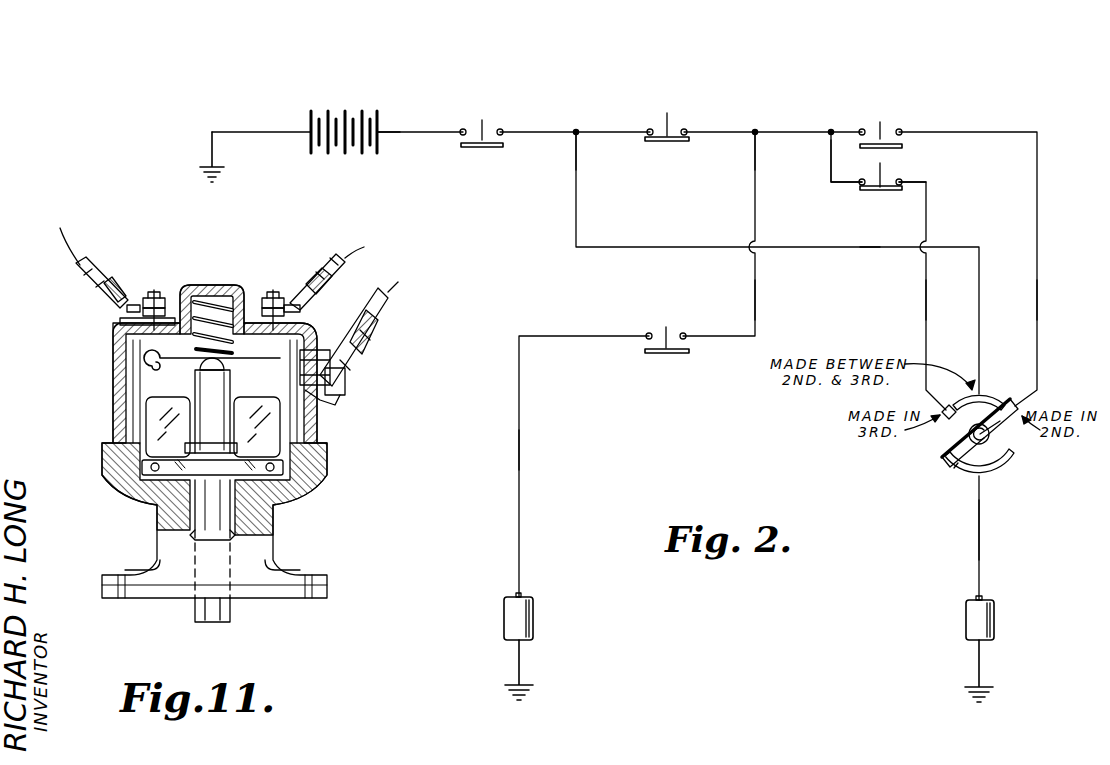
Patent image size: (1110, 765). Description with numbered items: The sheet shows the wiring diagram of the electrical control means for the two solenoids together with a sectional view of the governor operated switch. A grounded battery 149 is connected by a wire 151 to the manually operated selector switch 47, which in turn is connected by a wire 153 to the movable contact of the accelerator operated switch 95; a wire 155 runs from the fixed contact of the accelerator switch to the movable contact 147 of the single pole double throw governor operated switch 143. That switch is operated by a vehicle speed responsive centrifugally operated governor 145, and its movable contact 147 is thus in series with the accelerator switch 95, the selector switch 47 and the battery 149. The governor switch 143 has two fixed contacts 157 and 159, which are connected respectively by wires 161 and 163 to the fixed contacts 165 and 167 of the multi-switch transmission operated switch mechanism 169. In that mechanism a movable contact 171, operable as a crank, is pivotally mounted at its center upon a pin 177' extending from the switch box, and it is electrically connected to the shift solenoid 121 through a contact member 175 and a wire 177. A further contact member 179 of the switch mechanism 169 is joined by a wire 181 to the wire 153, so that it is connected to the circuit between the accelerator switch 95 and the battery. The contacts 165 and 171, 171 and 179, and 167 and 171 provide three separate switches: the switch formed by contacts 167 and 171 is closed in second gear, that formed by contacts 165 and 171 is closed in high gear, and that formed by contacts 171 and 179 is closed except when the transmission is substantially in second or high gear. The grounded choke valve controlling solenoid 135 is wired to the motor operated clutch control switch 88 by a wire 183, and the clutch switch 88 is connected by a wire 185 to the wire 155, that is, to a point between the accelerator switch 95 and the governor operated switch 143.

In FIG. 2, the selector switch 47 is at (475, 151).
In FIG. 2, the clutch control switch 88 is at (660, 356).
In FIG. 2, the accelerator operated switch 95 is at (669, 145).
In FIG. 2, the solenoid 121 is at (997, 620).
In FIG. 2, the choke valve controlling solenoid 135 is at (503, 624).
In FIG. 2, the governor operated switch 143 is at (892, 165).
In FIG. 11, the governor operated switch 143 is at (95, 378).
In FIG. 11, the governor 145 is at (262, 470).
In FIG. 2, the movable contact 147 is at (891, 159).
In FIG. 11, the movable contact 147 is at (250, 300).
In FIG. 2, the battery 149 is at (343, 148).
In FIG. 2, the wire 151 is at (402, 131).
In FIG. 2, the wire 153 is at (599, 130).
In FIG. 2, the wire 155 is at (785, 128).
In FIG. 2, the fixed contact 157 is at (892, 192).
In FIG. 11, the fixed contact 157 is at (325, 363).
In FIG. 2, the fixed contact 159 is at (877, 136).
In FIG. 11, the fixed contact 159 is at (304, 345).
In FIG. 2, the wire 161 is at (926, 300).
In FIG. 11, the wire 161 is at (397, 288).
In FIG. 2, the wire 163 is at (1039, 300).
In FIG. 11, the wire 163 is at (361, 249).
In FIG. 2, the fixed contact 165 is at (945, 420).
In FIG. 2, the fixed contact 167 is at (1019, 407).
In FIG. 2, the transmission operated switch mechanism 169 is at (940, 466).
In FIG. 2, the movable contact 171 is at (962, 472).
In FIG. 2, the contact member 175 is at (1009, 468).
In FIG. 2, the wire 177 is at (1023, 525).
In FIG. 2, the pin 177' is at (1029, 443).
In FIG. 2, the contact member 179 is at (996, 397).
In FIG. 2, the wire 181 is at (869, 248).
In FIG. 2, the wire 183 is at (521, 455).
In FIG. 2, the wire 185 is at (757, 298).